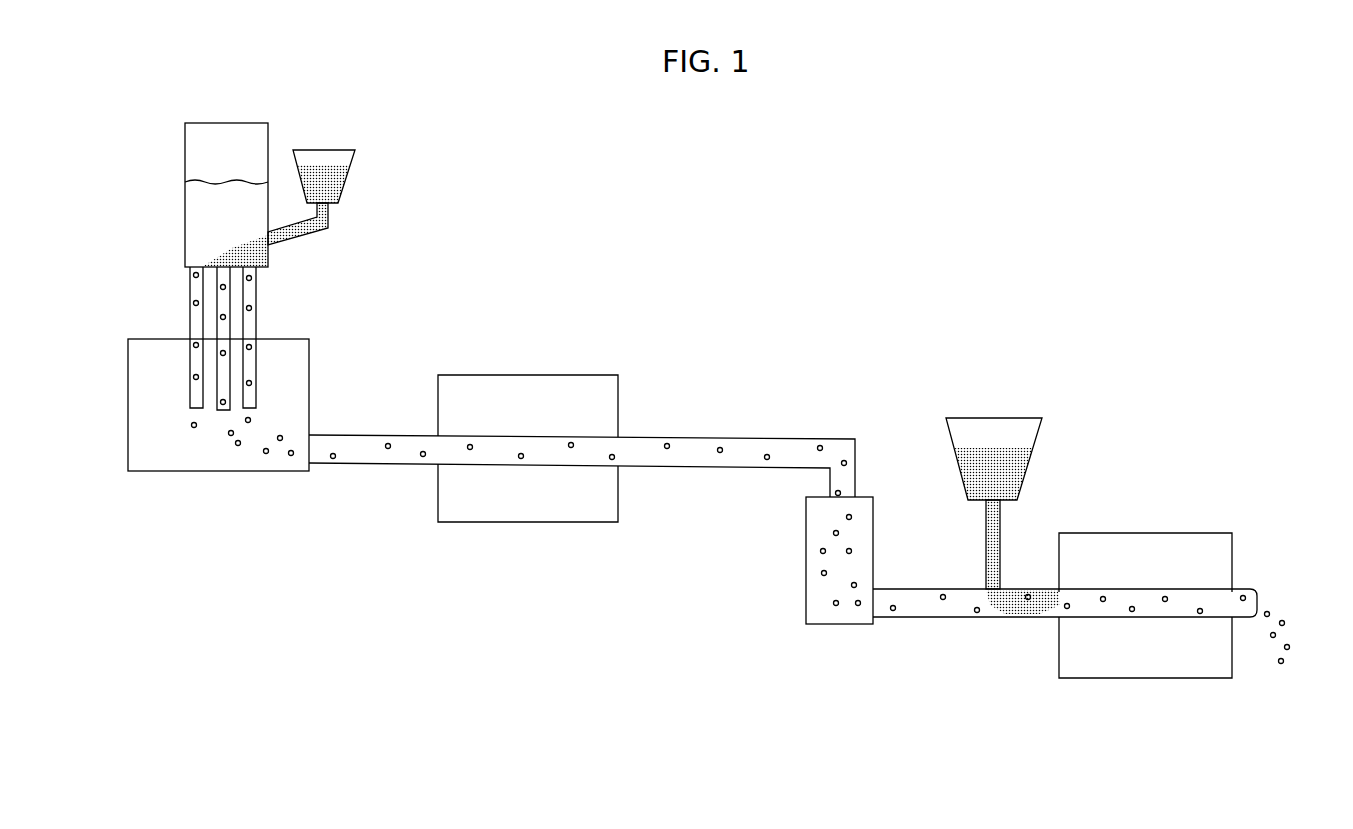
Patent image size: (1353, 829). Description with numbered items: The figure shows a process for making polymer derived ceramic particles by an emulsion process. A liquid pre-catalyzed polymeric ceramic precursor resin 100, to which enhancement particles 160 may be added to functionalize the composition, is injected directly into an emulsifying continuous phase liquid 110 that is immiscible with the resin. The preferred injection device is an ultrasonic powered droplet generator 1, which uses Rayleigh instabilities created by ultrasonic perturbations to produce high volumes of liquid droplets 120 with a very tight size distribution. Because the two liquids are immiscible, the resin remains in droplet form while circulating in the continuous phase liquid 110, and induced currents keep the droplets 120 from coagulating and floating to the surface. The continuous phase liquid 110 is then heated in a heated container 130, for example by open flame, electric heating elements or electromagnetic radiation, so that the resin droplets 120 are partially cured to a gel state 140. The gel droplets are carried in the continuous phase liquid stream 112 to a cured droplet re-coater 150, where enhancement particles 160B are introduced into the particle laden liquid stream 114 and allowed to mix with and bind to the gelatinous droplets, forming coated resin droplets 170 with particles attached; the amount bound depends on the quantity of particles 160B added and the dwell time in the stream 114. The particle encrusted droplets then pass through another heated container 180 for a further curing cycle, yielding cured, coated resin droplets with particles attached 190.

The pre-catalyzed polymeric ceramic precursor resin 100 is at (220, 175).
The enhancement particles 160 is at (330, 162).
The ultrasonic powered droplet generator 1 is at (188, 298).
The continuous phase liquid 110 is at (181, 440).
The liquid droplets 120 is at (335, 443).
The gel state 140 is at (713, 458).
The heated container 130 is at (568, 370).
The continuous phase liquid stream 112 is at (773, 450).
The cured droplet re-coater 150 is at (800, 582).
The particle laden liquid stream 114 is at (935, 603).
The enhancement particles 160B is at (997, 442).
The liquid coated solid resin droplets 170 is at (1022, 608).
The heated container 180 is at (1140, 522).
The cured, coated resin droplets with particles attached 190 is at (1245, 608).